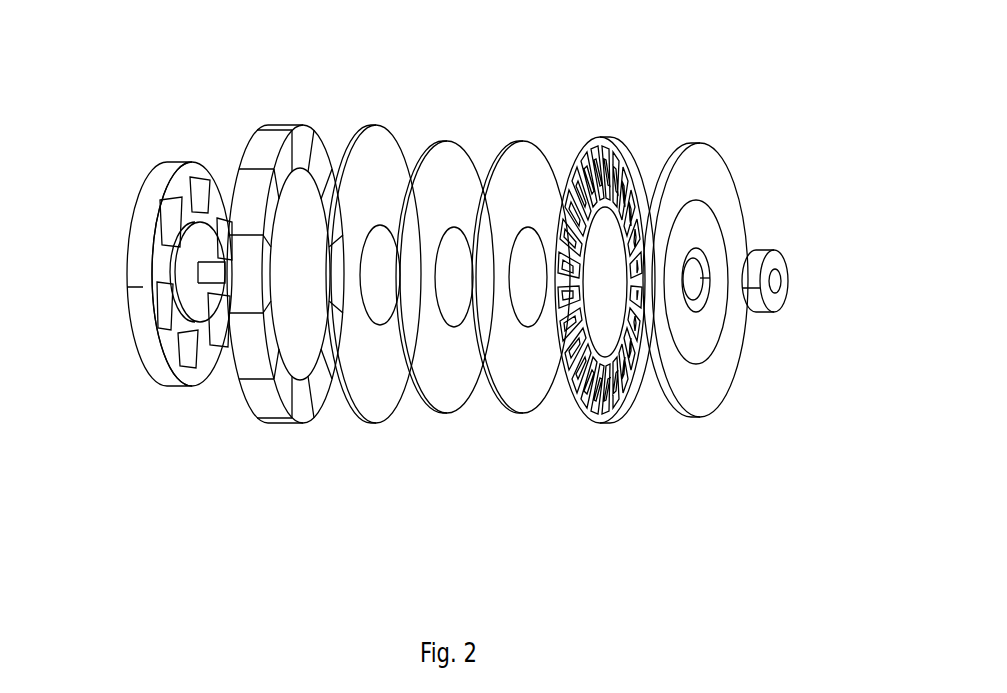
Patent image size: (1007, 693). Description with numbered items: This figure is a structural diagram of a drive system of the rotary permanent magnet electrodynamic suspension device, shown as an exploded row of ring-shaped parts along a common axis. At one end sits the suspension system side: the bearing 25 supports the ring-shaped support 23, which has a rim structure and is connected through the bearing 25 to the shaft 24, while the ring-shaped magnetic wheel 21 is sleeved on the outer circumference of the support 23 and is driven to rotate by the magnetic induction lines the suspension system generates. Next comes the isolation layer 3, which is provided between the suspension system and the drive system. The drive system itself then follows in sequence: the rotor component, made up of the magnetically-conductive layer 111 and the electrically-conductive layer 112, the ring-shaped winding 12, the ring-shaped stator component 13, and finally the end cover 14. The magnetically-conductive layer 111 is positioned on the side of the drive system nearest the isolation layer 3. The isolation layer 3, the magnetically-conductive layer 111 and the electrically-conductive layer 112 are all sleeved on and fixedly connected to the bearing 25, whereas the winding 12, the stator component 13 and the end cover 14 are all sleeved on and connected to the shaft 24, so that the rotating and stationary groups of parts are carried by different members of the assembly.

The isolation layer 3 is at (375, 424).
The winding 12 is at (618, 137).
The stator component 13 is at (732, 172).
The end cover 14 is at (772, 247).
The magnetic wheel 21 is at (289, 128).
The support 23 is at (162, 160).
The shaft 24 is at (199, 275).
The bearing 25 is at (153, 353).
The magnetically-conductive layer 111 is at (446, 142).
The electrically-conductive layer 112 is at (520, 414).